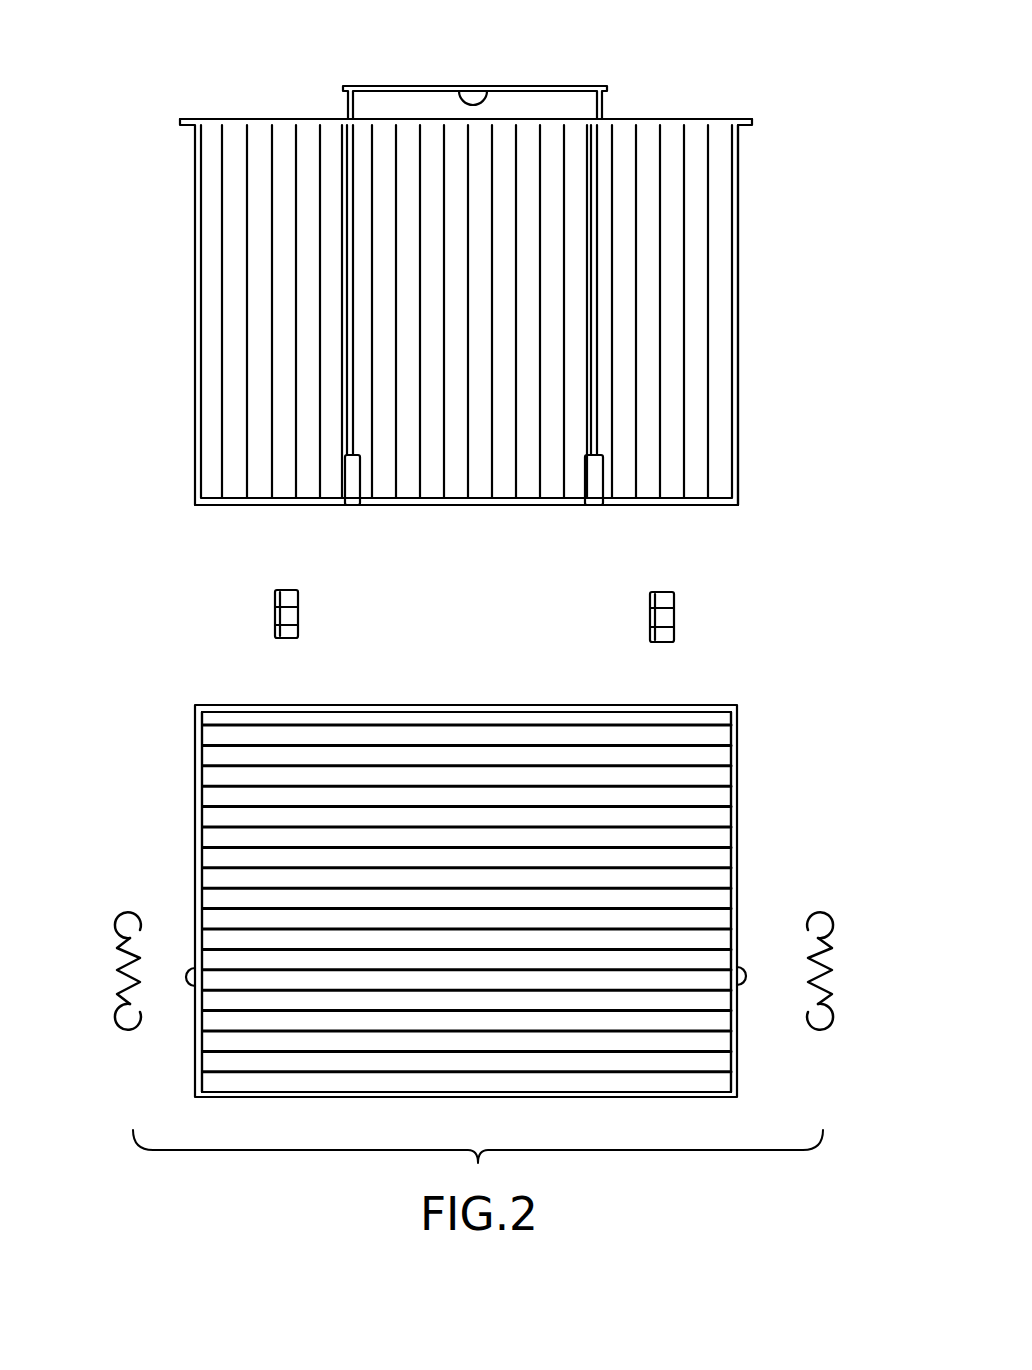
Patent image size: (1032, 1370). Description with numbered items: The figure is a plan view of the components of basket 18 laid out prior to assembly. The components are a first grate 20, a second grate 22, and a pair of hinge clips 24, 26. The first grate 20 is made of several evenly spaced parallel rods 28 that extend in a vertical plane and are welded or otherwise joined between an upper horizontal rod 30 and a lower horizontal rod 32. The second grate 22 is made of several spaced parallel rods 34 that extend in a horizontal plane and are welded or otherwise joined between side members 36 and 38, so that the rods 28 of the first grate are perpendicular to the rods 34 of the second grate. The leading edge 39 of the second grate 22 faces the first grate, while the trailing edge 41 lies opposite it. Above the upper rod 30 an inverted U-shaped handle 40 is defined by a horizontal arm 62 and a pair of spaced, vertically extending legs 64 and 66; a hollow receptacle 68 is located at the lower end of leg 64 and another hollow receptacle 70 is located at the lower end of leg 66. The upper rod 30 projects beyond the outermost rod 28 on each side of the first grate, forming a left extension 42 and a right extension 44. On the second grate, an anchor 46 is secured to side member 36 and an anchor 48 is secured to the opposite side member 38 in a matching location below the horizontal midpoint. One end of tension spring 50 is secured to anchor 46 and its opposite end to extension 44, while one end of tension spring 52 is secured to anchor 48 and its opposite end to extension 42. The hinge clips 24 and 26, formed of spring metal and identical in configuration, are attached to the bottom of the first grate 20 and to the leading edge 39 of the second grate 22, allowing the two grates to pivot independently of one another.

The basket 18 is at (162, 542).
The first grate 20 is at (783, 320).
The second grate 22 is at (835, 822).
The hinge clip 24 is at (300, 627).
The hinge clip 26 is at (675, 615).
The rods 28 is at (297, 132).
The upper horizontal rod 30 is at (665, 120).
The lower horizontal rod 32 is at (468, 507).
The rods 34 is at (690, 770).
The side member 36 is at (738, 790).
The side member 38 is at (195, 788).
The leading edge 39 is at (485, 705).
The handle 40 is at (460, 90).
The trailing edge 41 is at (605, 1100).
The extension 42 is at (193, 120).
The extension 44 is at (750, 125).
The anchor 46 is at (742, 985).
The anchor 48 is at (188, 986).
The tension spring 50 is at (753, 968).
The tension spring 52 is at (183, 970).
The horizontal arm 62 is at (563, 88).
The leg 64 is at (347, 443).
The leg 66 is at (598, 415).
The hollow receptacle 68 is at (357, 480).
The hollow receptacle 70 is at (593, 488).